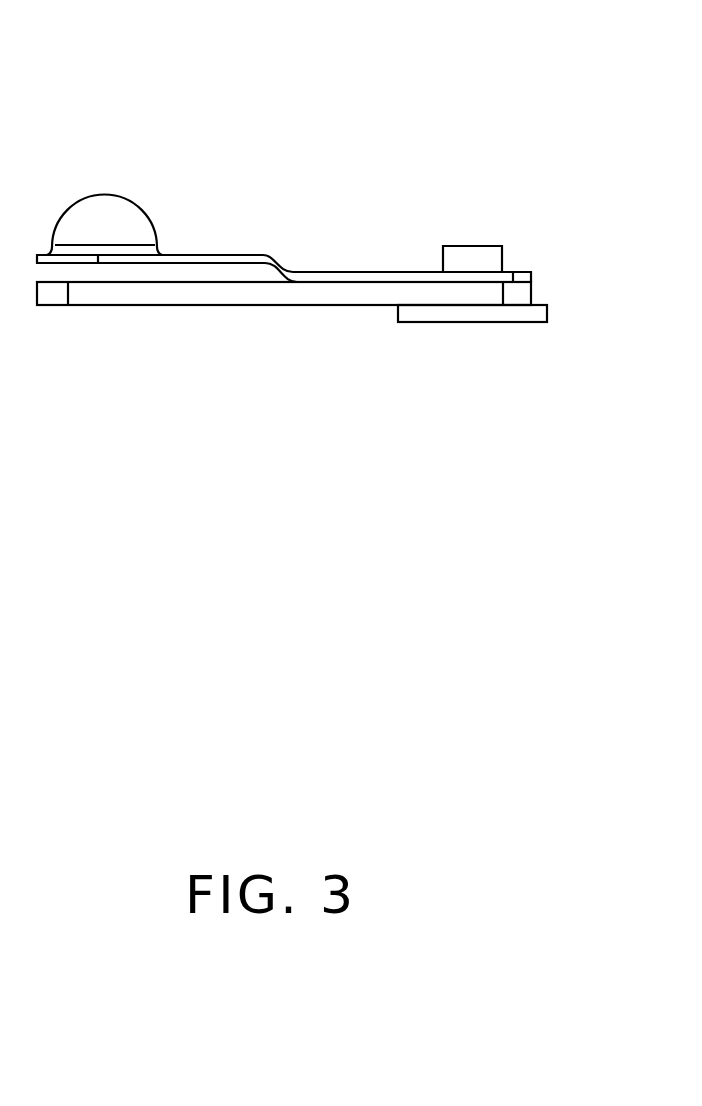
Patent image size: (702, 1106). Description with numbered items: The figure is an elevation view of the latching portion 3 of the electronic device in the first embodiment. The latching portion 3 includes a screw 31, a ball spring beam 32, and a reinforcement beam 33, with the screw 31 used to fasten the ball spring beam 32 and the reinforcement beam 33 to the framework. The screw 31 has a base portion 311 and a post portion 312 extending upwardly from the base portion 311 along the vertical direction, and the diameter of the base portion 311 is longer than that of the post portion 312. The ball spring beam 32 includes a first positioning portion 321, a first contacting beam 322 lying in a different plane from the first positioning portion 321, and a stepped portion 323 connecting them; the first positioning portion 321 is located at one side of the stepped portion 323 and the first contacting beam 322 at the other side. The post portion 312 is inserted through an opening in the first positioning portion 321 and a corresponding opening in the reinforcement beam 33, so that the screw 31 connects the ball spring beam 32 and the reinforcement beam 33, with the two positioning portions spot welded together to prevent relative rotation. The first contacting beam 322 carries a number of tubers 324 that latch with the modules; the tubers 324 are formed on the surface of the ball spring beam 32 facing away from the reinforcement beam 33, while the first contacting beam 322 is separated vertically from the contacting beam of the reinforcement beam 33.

The latching portion 3 is at (405, 88).
The screw 31 is at (580, 157).
The base portion 311 is at (498, 316).
The post portion 312 is at (471, 252).
The ball spring beam 32 is at (343, 138).
The first positioning portion 321 is at (375, 277).
The first contacting beam 322 is at (152, 261).
The stepped portion 323 is at (283, 280).
The tubers 324 is at (112, 218).
The reinforcement beam 33 is at (182, 293).